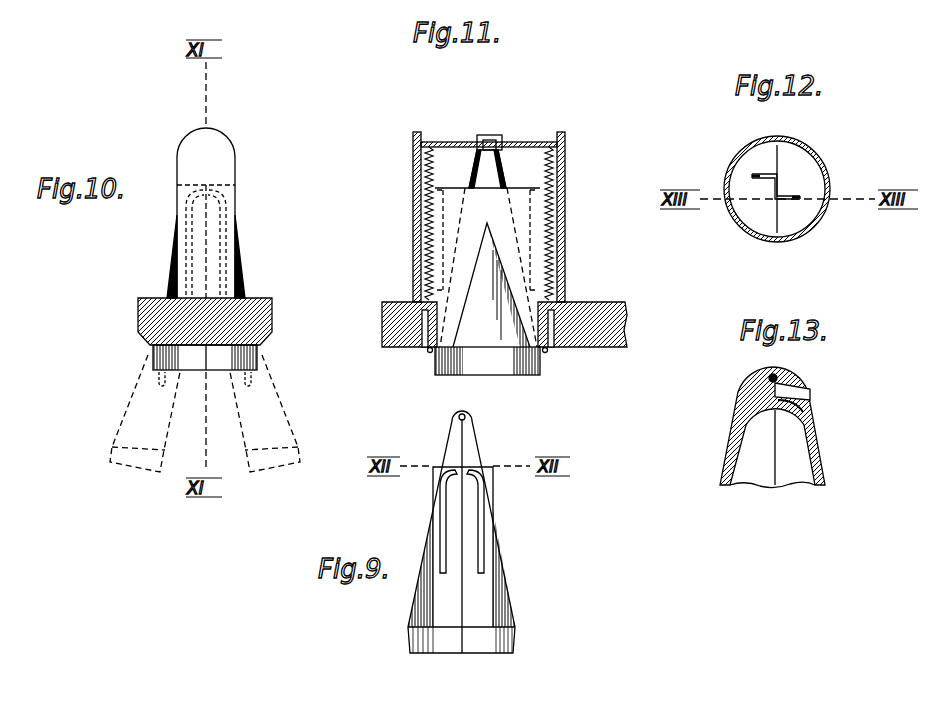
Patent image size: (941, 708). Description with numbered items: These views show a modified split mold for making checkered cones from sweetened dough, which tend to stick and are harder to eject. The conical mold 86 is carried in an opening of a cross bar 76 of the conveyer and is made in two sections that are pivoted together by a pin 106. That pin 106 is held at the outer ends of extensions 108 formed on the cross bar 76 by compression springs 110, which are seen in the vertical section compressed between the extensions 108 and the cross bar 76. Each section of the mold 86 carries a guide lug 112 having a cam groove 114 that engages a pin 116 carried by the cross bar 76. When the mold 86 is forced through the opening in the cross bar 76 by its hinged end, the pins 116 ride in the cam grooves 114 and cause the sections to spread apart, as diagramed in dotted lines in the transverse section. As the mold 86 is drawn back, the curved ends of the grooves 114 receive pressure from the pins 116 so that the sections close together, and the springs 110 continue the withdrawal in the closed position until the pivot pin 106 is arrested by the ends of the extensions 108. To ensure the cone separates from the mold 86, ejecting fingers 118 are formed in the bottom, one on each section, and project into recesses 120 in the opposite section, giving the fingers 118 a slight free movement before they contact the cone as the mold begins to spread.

In FIG. 10, the cross bar 76 is at (257, 307).
In FIG. 11, the cross bar 76 is at (598, 318).
In FIG. 11, the mold 86 is at (485, 175).
In FIG. 9, the mold 86 is at (506, 597).
In FIG. 12, the mold 86 is at (823, 160).
In FIG. 13, the mold 86 is at (740, 425).
In FIG. 11, the pin 106 is at (517, 140).
In FIG. 9, the pin 106 is at (496, 414).
In FIG. 13, the pin 106 is at (770, 378).
In FIG. 10, the extensions 108 is at (218, 153).
In FIG. 11, the extensions 108 is at (418, 132).
In FIG. 11, the compression springs 110 is at (432, 148).
In FIG. 11, the guide lug 112 is at (415, 190).
In FIG. 9, the guide lug 112 is at (468, 524).
In FIG. 11, the cam grooves 114 is at (443, 245).
In FIG. 9, the cam grooves 114 is at (483, 553).
In FIG. 10, the pins 116 is at (170, 280).
In FIG. 11, the pins 116 is at (432, 350).
In FIG. 12, the ejecting fingers 118 is at (752, 176).
In FIG. 13, the ejecting fingers 118 is at (808, 390).
In FIG. 12, the recesses 120 is at (770, 174).
In FIG. 13, the recesses 120 is at (812, 408).